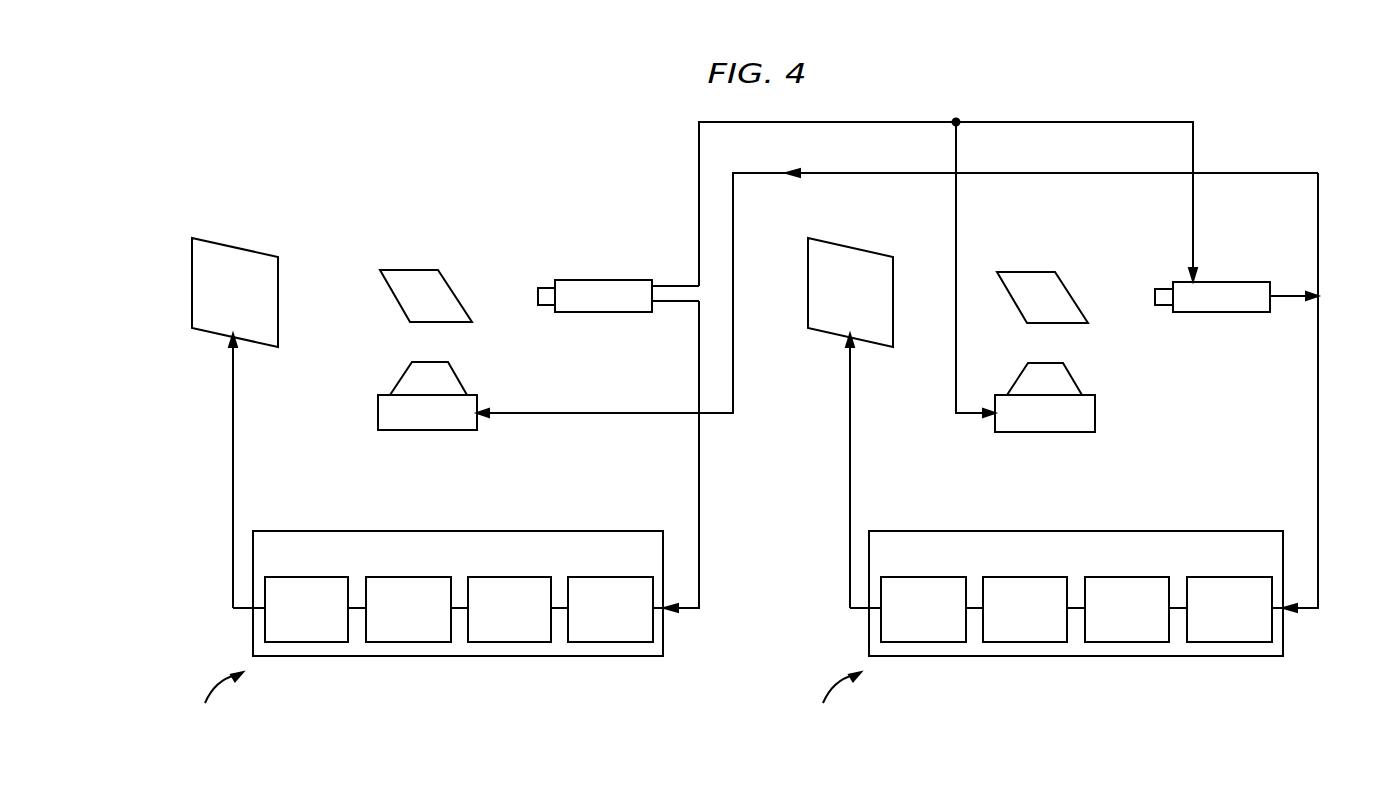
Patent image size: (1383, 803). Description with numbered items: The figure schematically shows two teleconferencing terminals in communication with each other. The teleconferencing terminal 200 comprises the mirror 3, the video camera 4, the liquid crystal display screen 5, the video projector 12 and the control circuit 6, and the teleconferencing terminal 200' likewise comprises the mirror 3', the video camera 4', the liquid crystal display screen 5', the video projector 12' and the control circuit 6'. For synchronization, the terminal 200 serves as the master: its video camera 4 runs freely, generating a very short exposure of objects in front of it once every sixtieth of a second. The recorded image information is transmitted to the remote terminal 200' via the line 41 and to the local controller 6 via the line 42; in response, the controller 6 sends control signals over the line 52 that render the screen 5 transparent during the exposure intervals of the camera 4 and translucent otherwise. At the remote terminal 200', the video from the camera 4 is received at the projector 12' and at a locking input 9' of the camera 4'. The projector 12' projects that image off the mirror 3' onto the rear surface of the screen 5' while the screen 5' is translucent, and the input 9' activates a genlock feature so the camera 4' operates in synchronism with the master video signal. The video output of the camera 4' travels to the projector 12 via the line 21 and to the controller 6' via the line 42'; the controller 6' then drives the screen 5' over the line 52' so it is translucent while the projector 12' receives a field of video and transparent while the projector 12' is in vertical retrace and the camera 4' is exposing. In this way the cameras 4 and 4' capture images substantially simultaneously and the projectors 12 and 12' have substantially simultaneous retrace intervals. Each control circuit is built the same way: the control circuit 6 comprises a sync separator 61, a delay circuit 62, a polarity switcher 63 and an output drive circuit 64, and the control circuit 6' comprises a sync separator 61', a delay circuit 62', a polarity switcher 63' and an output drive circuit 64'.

The liquid crystal display screen 5 is at (235, 271).
The mirror 3 is at (426, 273).
The video camera 4 is at (618, 276).
The video projector 12 is at (437, 385).
The line 52 is at (226, 471).
The control circuit 6 is at (458, 594).
The output drive circuit 64 is at (306, 641).
The polarity switcher 63 is at (408, 641).
The delay circuit 62 is at (509, 641).
The sync separator 61 is at (610, 641).
The line 42 is at (702, 456).
The line 41 is at (913, 121).
The line 21 is at (1057, 172).
The teleconferencing terminal 200 is at (220, 701).
The liquid crystal display screen 5' is at (850, 271).
The mirror 3' is at (1042, 274).
The video camera 4' is at (1236, 276).
The locking input 9' is at (1163, 257).
The video projector 12' is at (1055, 386).
The line 52' is at (842, 471).
The control circuit 6' is at (1076, 594).
The output drive circuit 64' is at (923, 641).
The polarity switcher 63' is at (1025, 641).
The delay circuit 62' is at (1127, 641).
The sync separator 61' is at (1229, 641).
The line 42' is at (1321, 392).
The teleconferencing terminal 200' is at (836, 701).